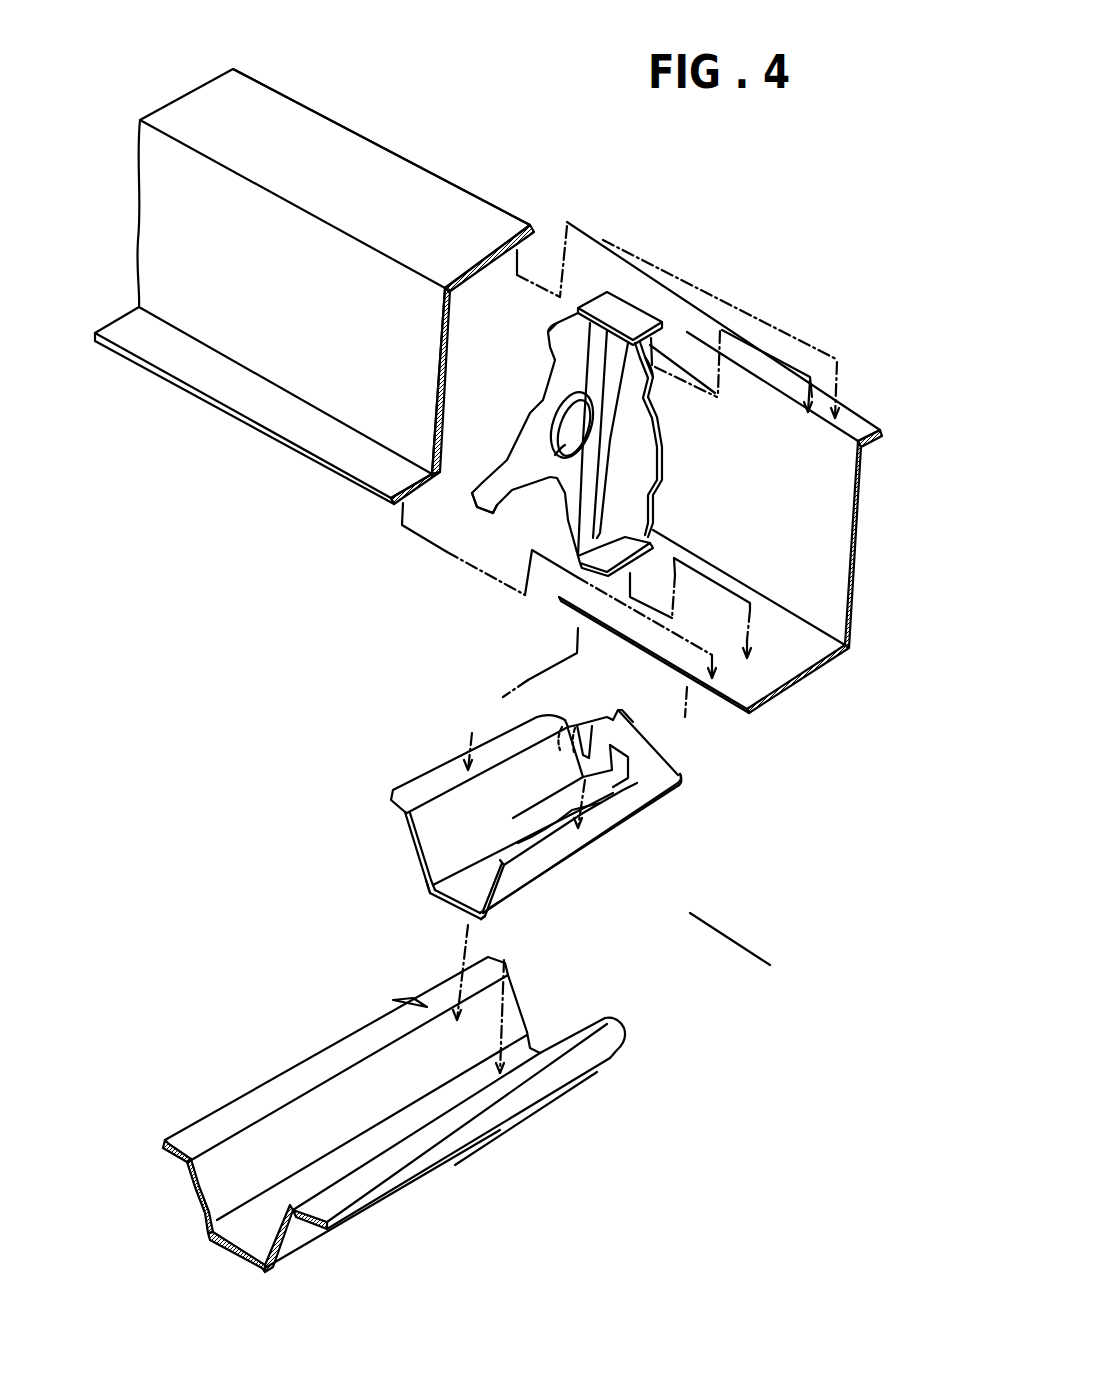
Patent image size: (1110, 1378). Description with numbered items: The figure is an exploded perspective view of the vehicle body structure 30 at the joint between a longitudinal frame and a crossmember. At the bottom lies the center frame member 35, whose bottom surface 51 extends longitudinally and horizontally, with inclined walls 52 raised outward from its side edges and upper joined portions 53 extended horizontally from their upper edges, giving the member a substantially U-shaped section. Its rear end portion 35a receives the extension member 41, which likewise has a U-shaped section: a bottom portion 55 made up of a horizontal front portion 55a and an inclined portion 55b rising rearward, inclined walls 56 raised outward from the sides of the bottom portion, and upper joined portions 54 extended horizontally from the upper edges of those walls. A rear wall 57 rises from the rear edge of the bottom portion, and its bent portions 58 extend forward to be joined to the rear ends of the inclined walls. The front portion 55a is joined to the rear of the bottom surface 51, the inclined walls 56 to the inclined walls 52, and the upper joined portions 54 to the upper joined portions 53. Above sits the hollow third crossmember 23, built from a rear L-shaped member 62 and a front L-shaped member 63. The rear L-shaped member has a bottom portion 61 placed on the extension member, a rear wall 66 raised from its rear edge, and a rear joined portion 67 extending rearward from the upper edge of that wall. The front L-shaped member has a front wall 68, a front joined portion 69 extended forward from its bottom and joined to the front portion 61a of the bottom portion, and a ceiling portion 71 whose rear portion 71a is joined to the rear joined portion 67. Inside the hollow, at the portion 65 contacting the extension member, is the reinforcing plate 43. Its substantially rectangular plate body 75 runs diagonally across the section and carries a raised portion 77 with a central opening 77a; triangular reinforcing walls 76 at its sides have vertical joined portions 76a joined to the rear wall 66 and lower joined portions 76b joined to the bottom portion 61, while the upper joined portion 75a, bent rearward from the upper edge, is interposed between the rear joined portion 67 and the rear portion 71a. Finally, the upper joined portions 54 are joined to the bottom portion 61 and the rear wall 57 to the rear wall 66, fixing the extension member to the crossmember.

The third crossmember 23 is at (315, 263).
The front L-shaped member 63 is at (430, 175).
The ceiling portion 71 is at (215, 128).
The rear portion of the ceiling portion 71a is at (305, 120).
The front wall 68 is at (215, 310).
The front joined portion 69 is at (252, 401).
The reinforcing plate 43 is at (669, 485).
The rear joined portion 67 is at (872, 432).
The rear L-shaped member 62 is at (848, 413).
The rear wall 66 is at (840, 528).
The bottom portion 61 is at (793, 645).
The front portion of the bottom portion 61a is at (758, 645).
The portion in contact with the extension member 65 is at (792, 645).
The plate body 75 is at (563, 387).
The upper joined portion 75a is at (615, 300).
The reinforcing wall 76 is at (530, 450).
The vertical joined portion 76a is at (548, 345).
The lower joined portion 76b is at (428, 472).
The raised portion 77 is at (558, 395).
The opening 77a is at (572, 443).
The extension member 41 is at (521, 783).
The upper joined portion of the extension member 54 is at (473, 745).
The inclined wall of the extension member 56 is at (432, 842).
The bottom portion of the extension member 55 is at (507, 880).
The front portion 55a is at (452, 900).
The inclined portion 55b is at (600, 820).
The rear wall of the extension member 57 is at (598, 745).
The bent portion 58 is at (572, 735).
The center frame member 35 is at (390, 1122).
The rear end portion of the center frame member 35a is at (560, 1100).
The upper joined portion of the center frame member 53 is at (350, 1040).
The inclined wall of the center frame member 52 is at (255, 1140).
The bottom surface 51 is at (256, 1238).
The mounting structure 30 is at (701, 914).